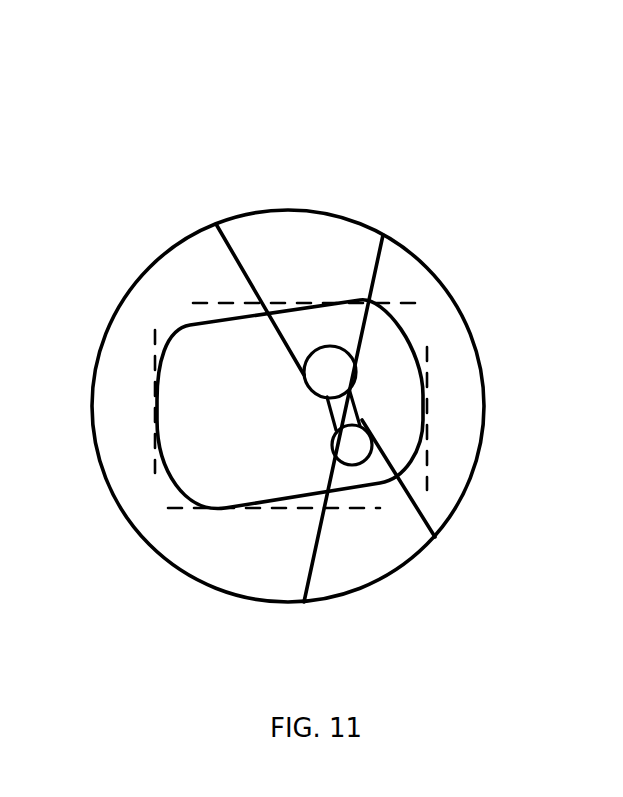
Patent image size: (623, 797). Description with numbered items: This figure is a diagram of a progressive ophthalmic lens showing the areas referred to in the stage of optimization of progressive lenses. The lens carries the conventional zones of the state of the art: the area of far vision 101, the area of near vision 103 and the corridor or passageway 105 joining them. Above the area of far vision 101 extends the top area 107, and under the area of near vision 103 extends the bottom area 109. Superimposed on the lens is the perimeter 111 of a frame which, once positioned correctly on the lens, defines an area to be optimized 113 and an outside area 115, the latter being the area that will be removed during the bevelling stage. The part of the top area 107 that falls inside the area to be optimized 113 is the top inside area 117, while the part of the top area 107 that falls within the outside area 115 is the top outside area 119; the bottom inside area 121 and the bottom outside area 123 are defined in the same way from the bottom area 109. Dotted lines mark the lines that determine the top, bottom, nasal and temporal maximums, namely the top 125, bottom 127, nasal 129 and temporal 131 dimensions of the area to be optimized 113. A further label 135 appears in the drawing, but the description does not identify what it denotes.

The area of far vision 101 is at (330, 372).
The area of near vision 103 is at (353, 448).
The corridor or passageway 105 is at (343, 417).
The top area 107 is at (330, 243).
The bottom area 109 is at (342, 558).
The perimeter of a frame 111 is at (191, 315).
The area to be optimized 113 is at (200, 448).
The outside area 115 is at (200, 545).
The top inside area 117 is at (297, 330).
The top outside area 119 is at (300, 235).
The bottom inside area 121 is at (363, 472).
The bottom outside area 123 is at (375, 537).
The top dimension 125 is at (390, 302).
The bottom dimension 127 is at (283, 508).
The nasal dimension 129 is at (427, 457).
The temporal dimension 131 is at (155, 470).
The boundary line 135 is at (4, 274).